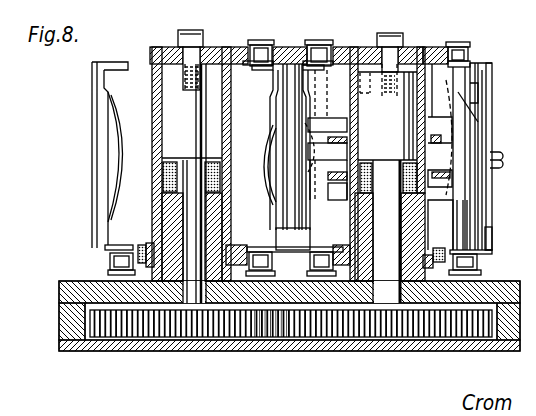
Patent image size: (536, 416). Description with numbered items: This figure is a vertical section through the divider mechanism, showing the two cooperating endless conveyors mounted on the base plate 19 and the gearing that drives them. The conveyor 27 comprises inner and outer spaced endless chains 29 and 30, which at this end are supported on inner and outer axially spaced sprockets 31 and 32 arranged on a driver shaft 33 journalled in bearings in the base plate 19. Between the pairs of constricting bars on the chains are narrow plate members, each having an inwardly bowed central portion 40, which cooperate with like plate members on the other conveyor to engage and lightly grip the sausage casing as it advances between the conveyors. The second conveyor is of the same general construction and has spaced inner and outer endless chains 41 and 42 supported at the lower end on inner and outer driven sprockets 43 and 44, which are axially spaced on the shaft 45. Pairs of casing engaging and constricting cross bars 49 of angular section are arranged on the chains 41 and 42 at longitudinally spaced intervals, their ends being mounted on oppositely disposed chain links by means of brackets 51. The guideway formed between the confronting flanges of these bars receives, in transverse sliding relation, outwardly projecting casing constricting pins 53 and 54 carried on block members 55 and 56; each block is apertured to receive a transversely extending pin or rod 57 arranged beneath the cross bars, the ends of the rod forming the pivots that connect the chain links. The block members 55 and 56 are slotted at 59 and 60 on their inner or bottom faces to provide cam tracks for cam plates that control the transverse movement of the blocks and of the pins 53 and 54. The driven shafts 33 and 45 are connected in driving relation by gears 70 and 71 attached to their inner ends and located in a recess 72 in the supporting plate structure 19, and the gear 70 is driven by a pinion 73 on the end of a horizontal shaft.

The base plate 19 is at (500, 282).
The endless conveyor 27 is at (172, 46).
The inner endless chain 29 is at (117, 254).
The outer endless chain 30 is at (269, 44).
The inner driven sprocket 31 is at (229, 256).
The outer driven sprocket 32 is at (147, 66).
The driver shaft 33 is at (185, 181).
The inwardly bowed central portion 40 is at (114, 152).
The inner endless chain 41 is at (470, 263).
The outer endless chain 42 is at (472, 54).
The inner driven sprocket 43 is at (442, 258).
The outer driven sprocket 44 is at (435, 50).
The shaft 45 is at (437, 185).
The casing engaging and constricting cross bar 49 is at (430, 66).
The bracket 51 is at (462, 88).
The casing constricting pin 53 is at (447, 148).
The casing constricting pin 54 is at (500, 168).
The block member 55 is at (440, 189).
The block member 56 is at (440, 123).
The transversely extending pin or rod 57 is at (478, 78).
The slot 59 is at (402, 228).
The slot 60 is at (481, 157).
The gear 70 is at (192, 338).
The gear 71 is at (331, 351).
The recess 72 is at (88, 328).
The pinion 73 is at (280, 338).